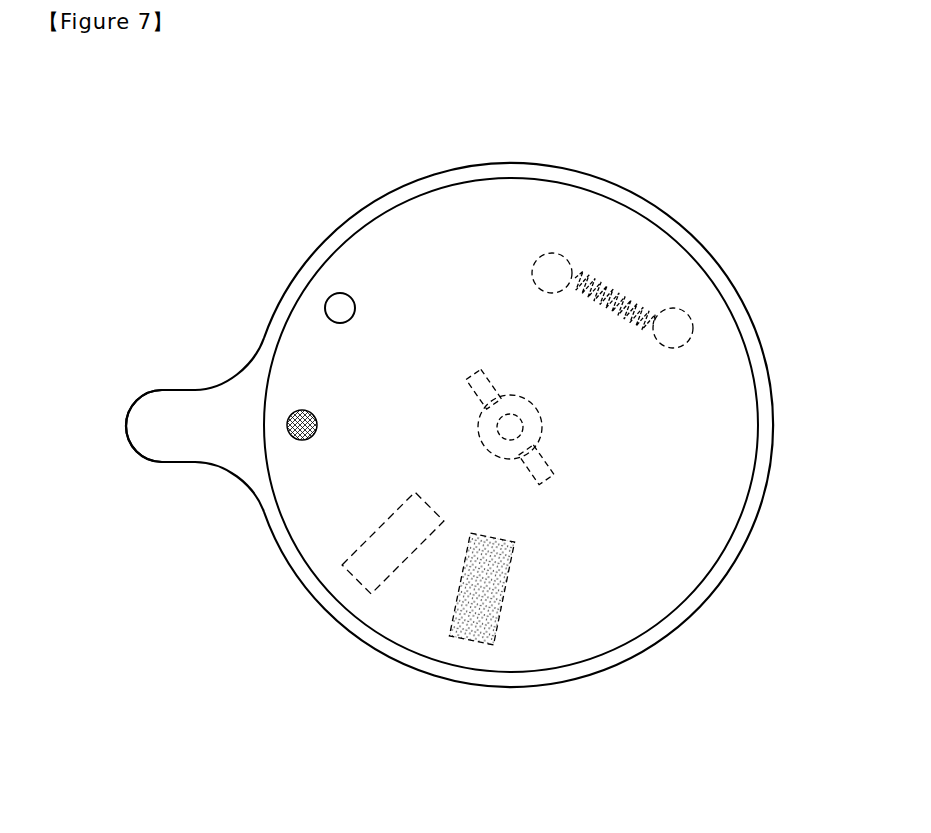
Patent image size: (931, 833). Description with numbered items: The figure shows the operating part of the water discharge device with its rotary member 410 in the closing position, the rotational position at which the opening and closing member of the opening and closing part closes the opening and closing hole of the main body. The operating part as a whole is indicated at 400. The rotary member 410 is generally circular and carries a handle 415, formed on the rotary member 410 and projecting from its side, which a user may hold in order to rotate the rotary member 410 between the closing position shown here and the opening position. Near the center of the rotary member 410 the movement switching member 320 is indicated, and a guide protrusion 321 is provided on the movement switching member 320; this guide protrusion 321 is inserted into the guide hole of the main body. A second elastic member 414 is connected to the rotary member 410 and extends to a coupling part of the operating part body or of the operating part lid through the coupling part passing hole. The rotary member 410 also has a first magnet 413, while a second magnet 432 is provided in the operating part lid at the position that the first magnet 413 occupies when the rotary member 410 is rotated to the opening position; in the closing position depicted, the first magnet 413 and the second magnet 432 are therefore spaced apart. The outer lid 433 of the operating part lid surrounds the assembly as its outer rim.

The cover assembly 400 is at (110, 412).
The rotary member 410 is at (178, 384).
The handle 415 is at (182, 462).
The movement switching member 320 is at (468, 417).
The guide protrusion 321 is at (473, 373).
The second elastic member 414 is at (622, 284).
The outer lid 433 is at (688, 440).
The second magnet 432 is at (402, 562).
The first magnet 413 is at (502, 605).